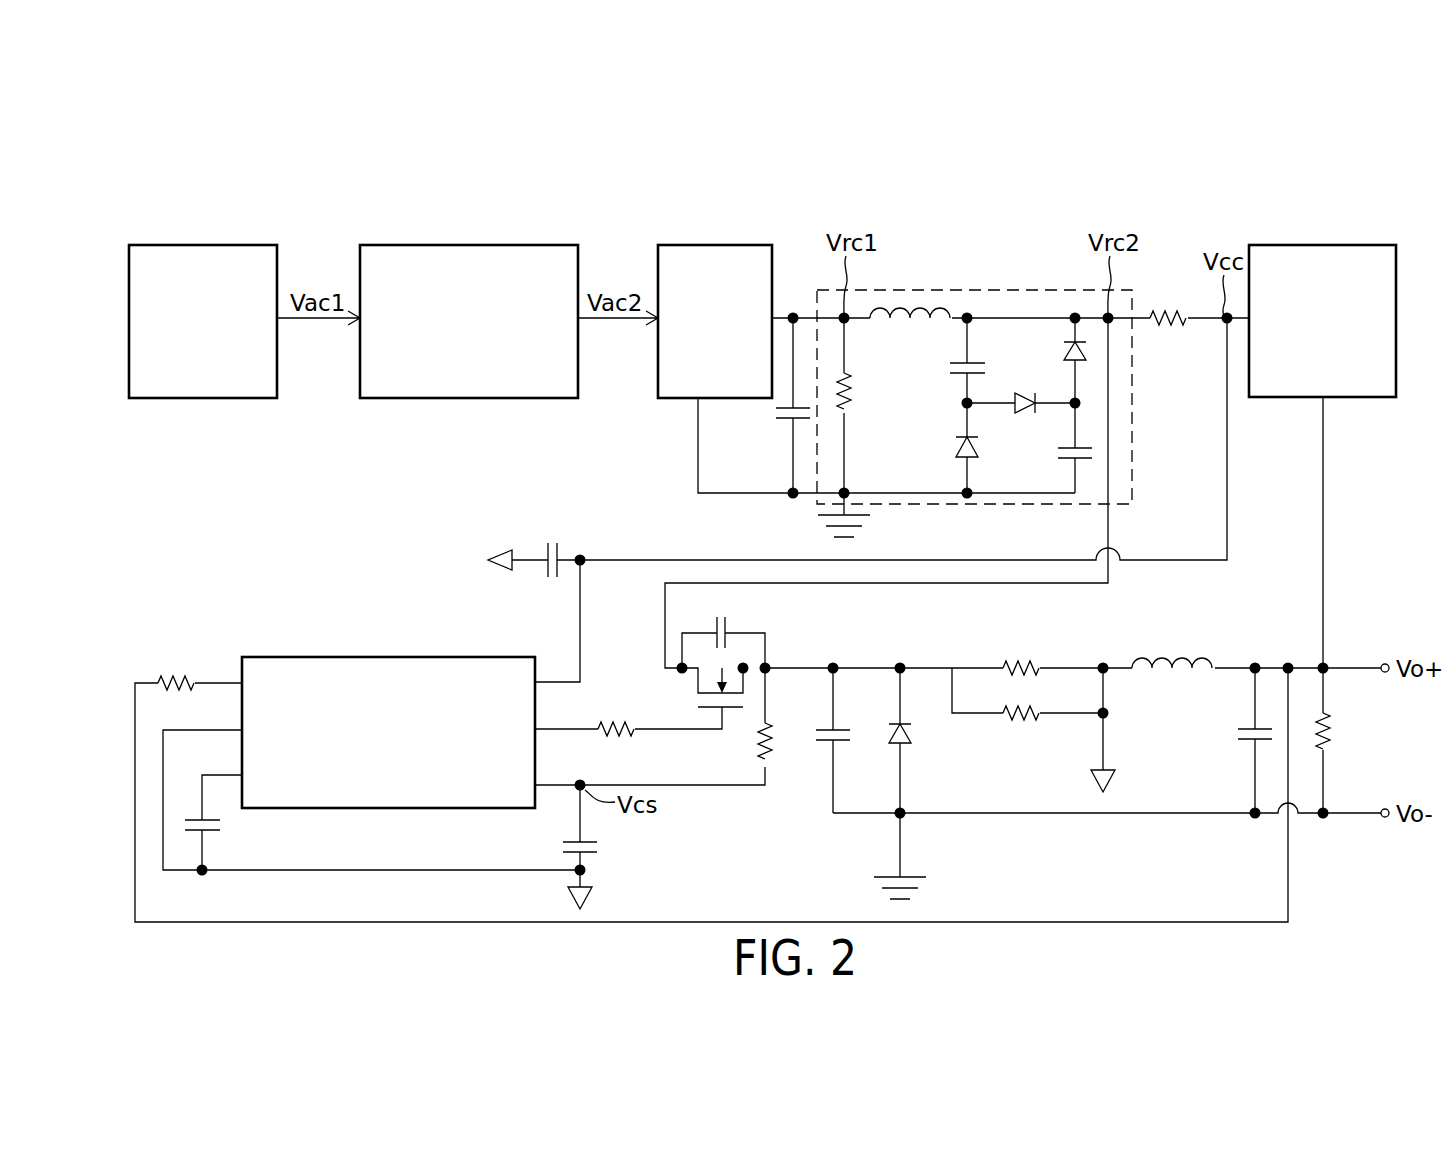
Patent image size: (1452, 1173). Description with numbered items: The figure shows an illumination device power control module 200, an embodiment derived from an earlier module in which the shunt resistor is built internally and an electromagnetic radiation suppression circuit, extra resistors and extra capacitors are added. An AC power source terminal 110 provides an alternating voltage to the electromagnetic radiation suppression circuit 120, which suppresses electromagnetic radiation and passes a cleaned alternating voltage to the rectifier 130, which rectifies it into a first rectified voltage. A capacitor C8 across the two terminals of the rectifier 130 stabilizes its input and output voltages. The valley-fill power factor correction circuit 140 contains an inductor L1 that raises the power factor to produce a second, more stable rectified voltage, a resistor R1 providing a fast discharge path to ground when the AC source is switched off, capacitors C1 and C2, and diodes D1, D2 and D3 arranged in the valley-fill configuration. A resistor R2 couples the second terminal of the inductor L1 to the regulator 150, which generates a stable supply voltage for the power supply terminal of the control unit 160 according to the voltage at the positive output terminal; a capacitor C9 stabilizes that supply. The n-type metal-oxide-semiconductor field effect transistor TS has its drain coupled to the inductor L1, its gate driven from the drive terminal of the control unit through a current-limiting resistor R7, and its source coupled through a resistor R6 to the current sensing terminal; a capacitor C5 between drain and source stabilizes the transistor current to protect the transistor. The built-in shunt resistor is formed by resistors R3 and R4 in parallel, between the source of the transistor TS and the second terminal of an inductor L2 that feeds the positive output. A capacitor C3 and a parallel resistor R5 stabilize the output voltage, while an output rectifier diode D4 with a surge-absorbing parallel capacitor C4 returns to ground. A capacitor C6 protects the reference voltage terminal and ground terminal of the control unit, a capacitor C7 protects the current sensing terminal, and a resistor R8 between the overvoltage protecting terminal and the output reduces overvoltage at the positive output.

The illumination device power control module 200 is at (1264, 158).
The AC power source terminal 110 is at (203, 245).
The electromagnetic radiation suppression circuit 120 is at (463, 245).
The rectifier 130 is at (706, 245).
The valley-fill power factor correction circuit 140 is at (978, 290).
The regulator 150 is at (1346, 245).
The control unit 160 is at (423, 655).
The capacitor C1 is at (950, 364).
The capacitor C2 is at (1058, 456).
The capacitor C3 is at (1238, 734).
The capacitor C4 is at (812, 741).
The capacitor C5 is at (726, 617).
The capacitor C6 is at (224, 825).
The capacitor C7 is at (598, 849).
The capacitor C8 is at (778, 420).
The capacitor C9 is at (556, 541).
The diode D1 is at (956, 448).
The diode D2 is at (1026, 416).
The diode D3 is at (1064, 347).
The diode D4 is at (910, 744).
The inductor L1 is at (904, 303).
The inductor L2 is at (1175, 672).
The resistor R1 is at (856, 397).
The resistor R2 is at (1161, 311).
The resistor R3 is at (1020, 660).
The resistor R4 is at (1023, 718).
The resistor R5 is at (1331, 731).
The resistor R6 is at (758, 746).
The resistor R7 is at (615, 719).
The resistor R8 is at (174, 677).
The n-type metal-oxide-semiconductor field effect transistor TS is at (698, 705).